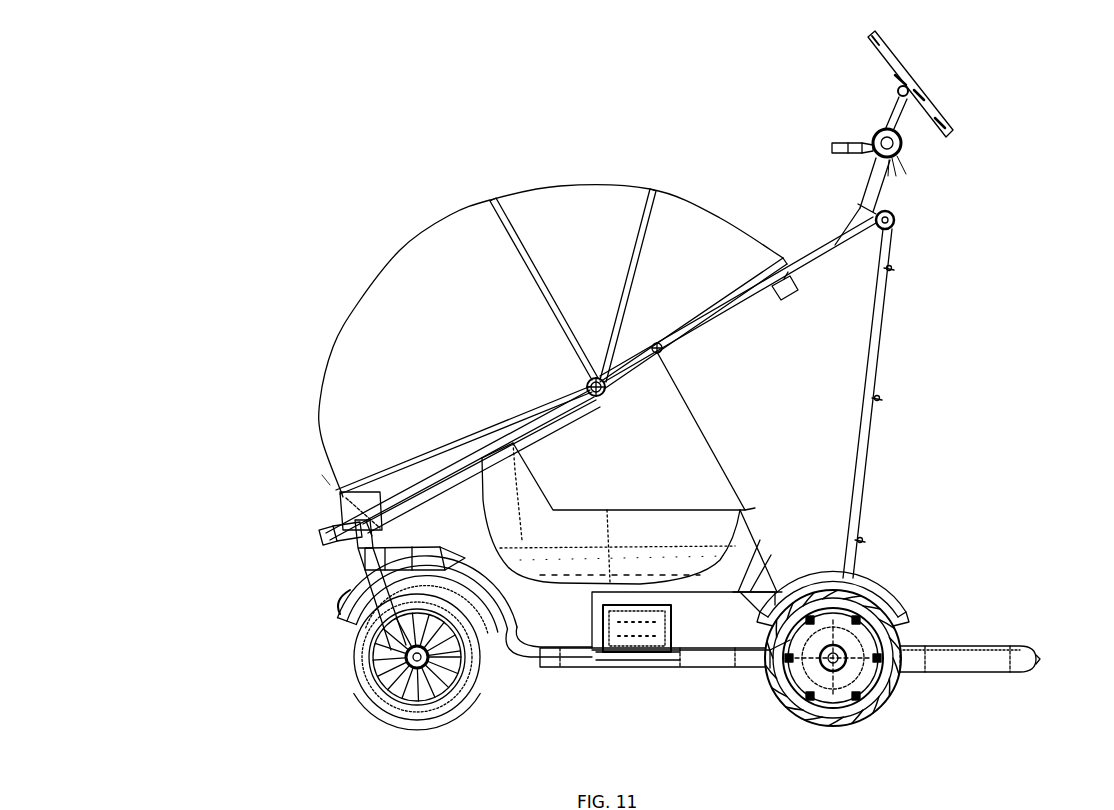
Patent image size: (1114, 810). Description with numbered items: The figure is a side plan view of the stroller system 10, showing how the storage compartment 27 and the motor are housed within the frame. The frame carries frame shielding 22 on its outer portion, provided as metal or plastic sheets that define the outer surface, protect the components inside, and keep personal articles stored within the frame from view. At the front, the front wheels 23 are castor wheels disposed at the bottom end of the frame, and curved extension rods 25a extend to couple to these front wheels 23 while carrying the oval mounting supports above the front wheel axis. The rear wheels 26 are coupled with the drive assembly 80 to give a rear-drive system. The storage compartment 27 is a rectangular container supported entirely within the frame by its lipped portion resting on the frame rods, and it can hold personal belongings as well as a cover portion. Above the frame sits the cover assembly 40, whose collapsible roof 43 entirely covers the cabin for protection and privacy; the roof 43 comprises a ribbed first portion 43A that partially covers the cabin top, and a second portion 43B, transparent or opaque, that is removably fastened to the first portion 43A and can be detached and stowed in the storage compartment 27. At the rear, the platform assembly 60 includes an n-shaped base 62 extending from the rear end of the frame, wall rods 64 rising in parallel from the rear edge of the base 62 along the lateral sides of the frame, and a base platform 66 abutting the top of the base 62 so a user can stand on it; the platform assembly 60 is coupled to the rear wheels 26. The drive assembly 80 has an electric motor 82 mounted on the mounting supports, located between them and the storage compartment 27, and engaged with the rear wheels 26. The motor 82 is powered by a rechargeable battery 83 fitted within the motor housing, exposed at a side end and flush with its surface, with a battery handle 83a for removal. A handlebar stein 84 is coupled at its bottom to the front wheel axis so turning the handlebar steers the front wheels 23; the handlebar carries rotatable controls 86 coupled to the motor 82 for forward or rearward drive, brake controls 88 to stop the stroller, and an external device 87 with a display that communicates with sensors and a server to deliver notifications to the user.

The stroller system 10 is at (466, 72).
The frame shielding 22 is at (641, 460).
The front wheels 23 is at (348, 650).
The curved extension rods 25a is at (430, 566).
The rear wheels 26 is at (852, 728).
The storage compartment 27 is at (640, 556).
The cover assembly 40 is at (320, 440).
The collapsible roof 43 is at (417, 238).
The first portion 43A is at (603, 258).
The second portion 43B is at (470, 355).
The platform assembly 60 is at (1052, 654).
The base 62 is at (938, 670).
The wall rods 64 is at (866, 447).
The base platform 66 is at (950, 645).
The drive assembly 80 is at (748, 636).
The motor 82 is at (590, 630).
The battery 83 is at (651, 640).
The battery handle 83a is at (595, 648).
The handlebar stein 84 is at (848, 185).
The controls 86 is at (903, 147).
The external device 87 is at (878, 32).
The brake controls 88 is at (835, 148).